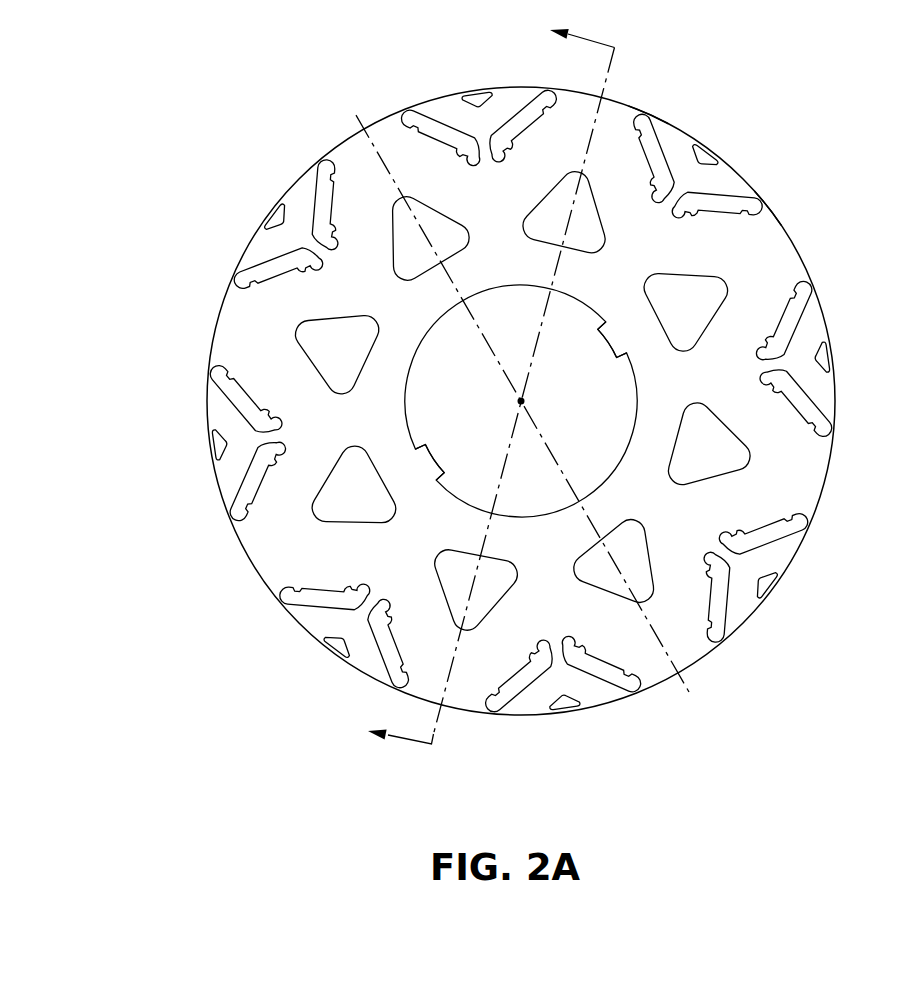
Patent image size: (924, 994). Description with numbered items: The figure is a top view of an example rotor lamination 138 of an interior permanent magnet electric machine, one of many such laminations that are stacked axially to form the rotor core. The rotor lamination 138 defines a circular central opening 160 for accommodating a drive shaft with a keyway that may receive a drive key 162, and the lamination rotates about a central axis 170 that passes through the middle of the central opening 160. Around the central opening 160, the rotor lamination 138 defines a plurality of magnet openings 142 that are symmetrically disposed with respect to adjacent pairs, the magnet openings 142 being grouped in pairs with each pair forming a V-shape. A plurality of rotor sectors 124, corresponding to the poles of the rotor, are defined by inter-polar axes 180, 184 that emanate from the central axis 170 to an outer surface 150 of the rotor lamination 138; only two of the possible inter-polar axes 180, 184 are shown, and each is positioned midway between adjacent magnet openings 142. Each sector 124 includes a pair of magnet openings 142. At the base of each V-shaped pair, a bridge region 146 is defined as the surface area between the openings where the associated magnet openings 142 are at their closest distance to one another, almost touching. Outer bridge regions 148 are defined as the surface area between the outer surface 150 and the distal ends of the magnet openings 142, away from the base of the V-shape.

The rotor sector 124 is at (512, 187).
The rotor lamination 138 is at (388, 129).
The magnet opening 142 is at (545, 383).
The bridge region 146 is at (780, 364).
The outer bridge region 148 is at (630, 107).
The outer surface 150 is at (612, 717).
The circular central opening 160 is at (577, 302).
The drive key 162 is at (600, 352).
The central axis 170 is at (527, 400).
The inter-polar axis 180 is at (437, 735).
The inter-polar axis 184 is at (694, 694).